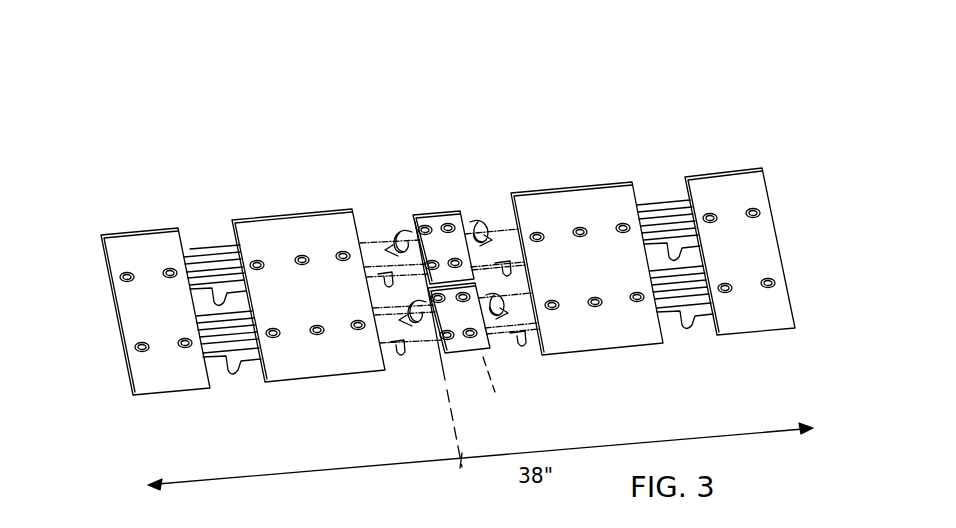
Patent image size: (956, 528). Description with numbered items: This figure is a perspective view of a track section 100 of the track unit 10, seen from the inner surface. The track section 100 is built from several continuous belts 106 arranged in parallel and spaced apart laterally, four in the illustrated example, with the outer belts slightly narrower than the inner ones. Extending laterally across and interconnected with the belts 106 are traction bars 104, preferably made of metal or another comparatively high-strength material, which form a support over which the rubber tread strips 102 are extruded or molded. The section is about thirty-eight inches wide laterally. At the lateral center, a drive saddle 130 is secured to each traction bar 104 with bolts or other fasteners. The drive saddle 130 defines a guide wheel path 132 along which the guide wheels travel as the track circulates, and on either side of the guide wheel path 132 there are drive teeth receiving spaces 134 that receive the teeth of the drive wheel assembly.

The track unit 10 is at (456, 5).
The track section 100 is at (146, 113).
The tread strip 102 is at (655, 217).
The traction bar 104 is at (207, 265).
The continuous belt 106 is at (132, 232).
The drive saddle 130 is at (433, 243).
The guide wheel path 132 is at (457, 200).
The drive teeth receiving space 134 is at (387, 307).